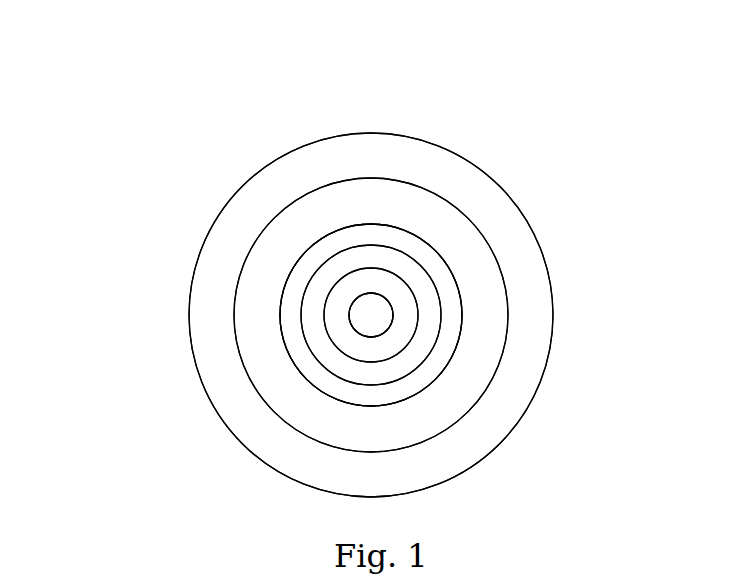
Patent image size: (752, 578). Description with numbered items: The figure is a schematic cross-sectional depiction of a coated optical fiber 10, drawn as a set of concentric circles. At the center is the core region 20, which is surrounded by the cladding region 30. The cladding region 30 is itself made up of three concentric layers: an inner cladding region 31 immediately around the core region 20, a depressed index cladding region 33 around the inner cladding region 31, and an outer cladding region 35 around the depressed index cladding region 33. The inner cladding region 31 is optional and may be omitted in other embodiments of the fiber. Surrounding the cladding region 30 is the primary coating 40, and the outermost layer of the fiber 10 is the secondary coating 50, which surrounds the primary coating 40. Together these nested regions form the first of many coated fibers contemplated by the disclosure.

The fiber 10 is at (136, 108).
The core region 20 is at (368, 315).
The cladding region 30 is at (623, 265).
The inner cladding region 31 is at (397, 298).
The depressed index cladding region 33 is at (423, 328).
The outer cladding region 35 is at (462, 318).
The primary coating 40 is at (287, 375).
The secondary coating 50 is at (253, 428).